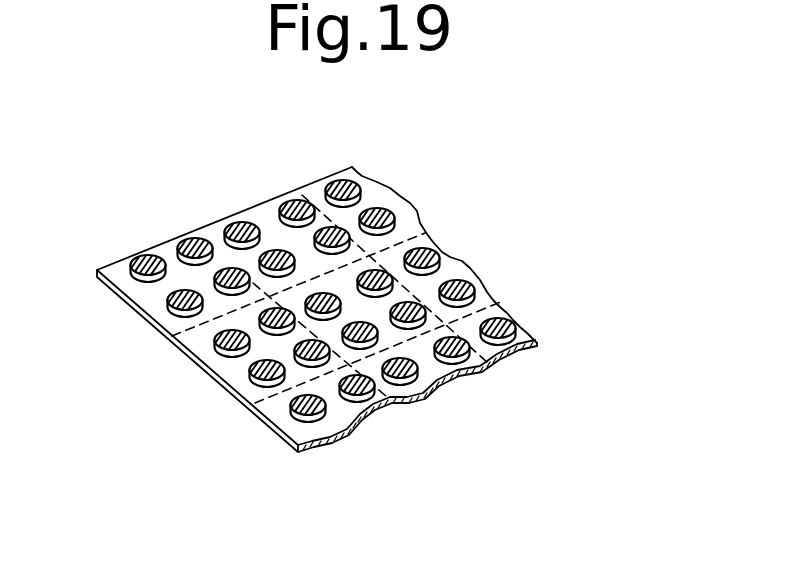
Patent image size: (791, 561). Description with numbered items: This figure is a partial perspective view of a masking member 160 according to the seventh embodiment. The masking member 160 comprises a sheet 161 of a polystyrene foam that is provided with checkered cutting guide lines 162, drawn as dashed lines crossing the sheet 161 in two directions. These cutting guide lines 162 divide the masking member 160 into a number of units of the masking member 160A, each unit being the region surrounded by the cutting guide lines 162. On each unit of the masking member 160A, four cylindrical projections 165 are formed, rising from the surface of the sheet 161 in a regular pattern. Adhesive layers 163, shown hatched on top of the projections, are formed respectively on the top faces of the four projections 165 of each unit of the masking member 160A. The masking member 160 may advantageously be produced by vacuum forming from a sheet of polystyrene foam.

The masking member 160 is at (415, 413).
The unit of the masking member 160A is at (290, 233).
The sheet 161 is at (408, 225).
The cutting guide lines 162 is at (330, 223).
The adhesive layers 163 is at (235, 262).
The cylindrical projections 165 is at (214, 282).